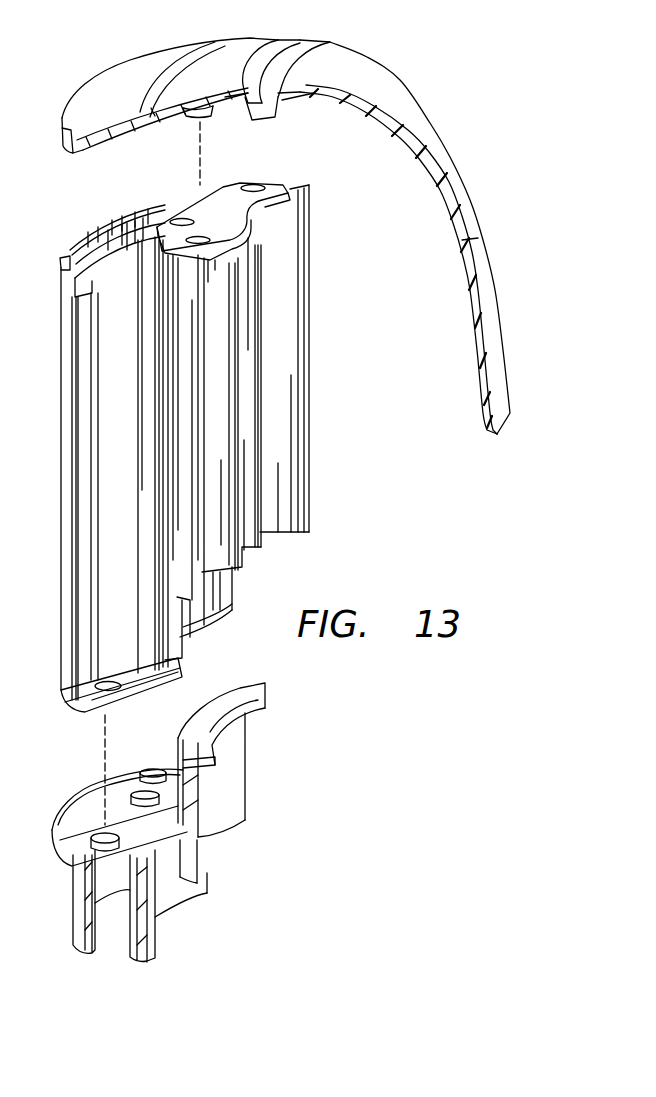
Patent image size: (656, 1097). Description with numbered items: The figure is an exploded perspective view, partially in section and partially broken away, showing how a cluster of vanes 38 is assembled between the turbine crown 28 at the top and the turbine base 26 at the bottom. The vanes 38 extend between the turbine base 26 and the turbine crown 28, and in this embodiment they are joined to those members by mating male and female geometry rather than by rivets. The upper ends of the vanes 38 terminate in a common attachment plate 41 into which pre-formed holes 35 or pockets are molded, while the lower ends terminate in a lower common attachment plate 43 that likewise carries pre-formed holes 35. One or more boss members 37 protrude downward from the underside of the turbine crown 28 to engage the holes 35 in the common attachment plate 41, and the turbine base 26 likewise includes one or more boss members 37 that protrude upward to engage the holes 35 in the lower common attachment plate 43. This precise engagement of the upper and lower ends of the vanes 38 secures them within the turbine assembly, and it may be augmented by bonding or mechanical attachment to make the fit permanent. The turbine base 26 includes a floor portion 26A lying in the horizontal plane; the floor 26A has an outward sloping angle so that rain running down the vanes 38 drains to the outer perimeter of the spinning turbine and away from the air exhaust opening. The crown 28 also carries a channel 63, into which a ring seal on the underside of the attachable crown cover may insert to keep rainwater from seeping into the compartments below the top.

The turbine crown 28 is at (93, 68).
The channel 63 is at (283, 50).
The boss members 37 is at (190, 122).
The common attachment plate 41 is at (221, 185).
The holes 35 is at (258, 186).
The vanes 38 is at (105, 216).
The lower common attachment plate 43 is at (142, 689).
The turbine base 26 is at (276, 690).
The floor portion 26A is at (90, 810).